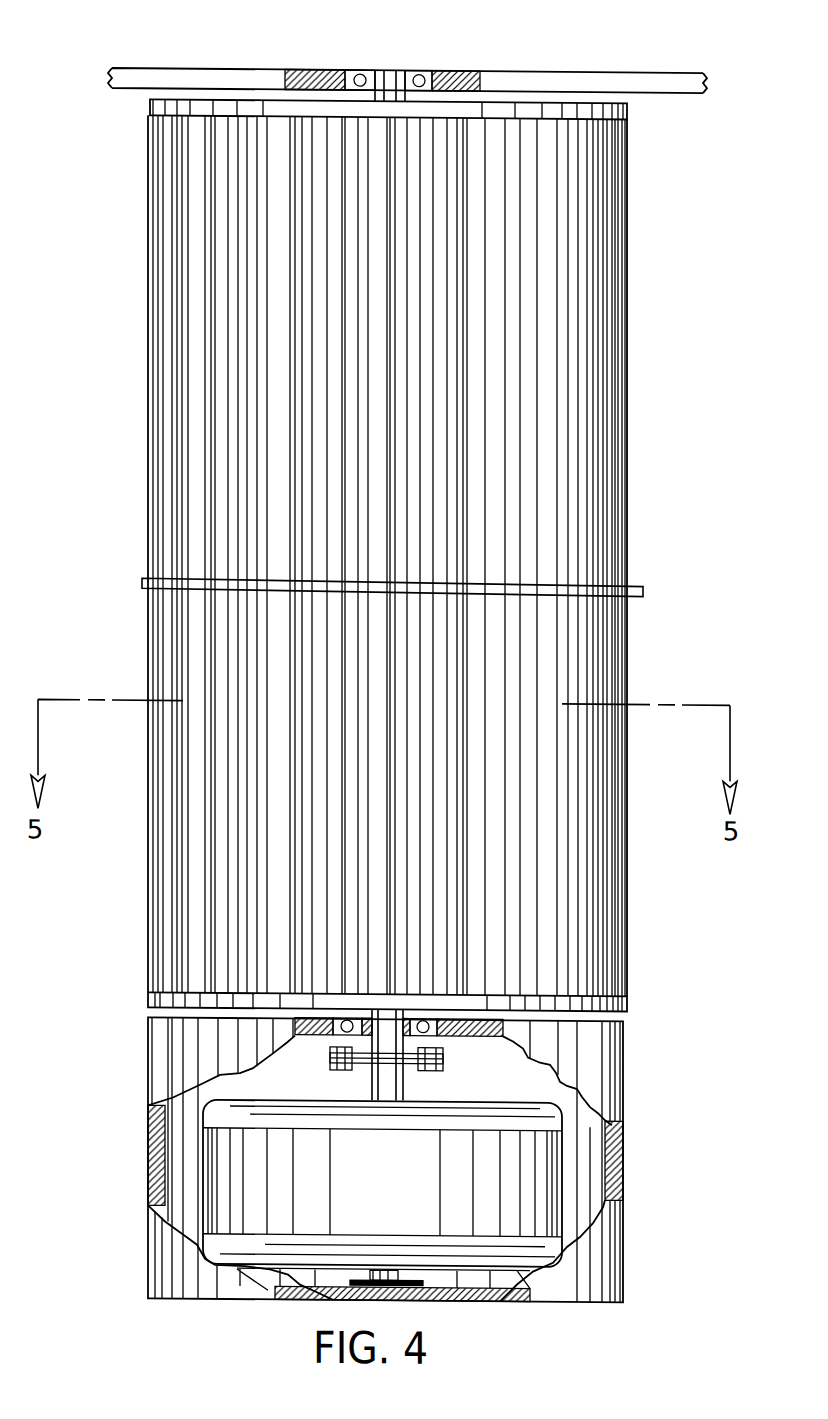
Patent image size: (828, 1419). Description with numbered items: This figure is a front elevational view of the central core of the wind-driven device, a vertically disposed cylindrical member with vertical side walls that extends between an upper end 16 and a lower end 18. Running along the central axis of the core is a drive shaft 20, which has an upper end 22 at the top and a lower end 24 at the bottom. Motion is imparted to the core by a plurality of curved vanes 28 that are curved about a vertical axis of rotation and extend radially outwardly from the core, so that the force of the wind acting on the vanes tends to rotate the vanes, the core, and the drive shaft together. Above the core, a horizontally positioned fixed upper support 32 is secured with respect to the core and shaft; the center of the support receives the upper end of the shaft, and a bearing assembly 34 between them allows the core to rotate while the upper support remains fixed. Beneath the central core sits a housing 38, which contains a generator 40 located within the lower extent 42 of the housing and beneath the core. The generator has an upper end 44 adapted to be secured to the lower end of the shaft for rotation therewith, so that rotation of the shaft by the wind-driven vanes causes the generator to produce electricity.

The upper end 16 is at (150, 104).
The lower end 18 is at (148, 996).
The drive shaft 20 is at (391, 85).
The upper end 22 is at (377, 65).
The lower end 24 is at (397, 1034).
The curved vanes 28 is at (570, 221).
The fixed upper support 32 is at (580, 64).
The bearing assembly 34 is at (428, 65).
The housing 38 is at (578, 1295).
The generator 40 is at (405, 1206).
The lower extent 42 is at (333, 1275).
The upper end 44 is at (383, 1075).